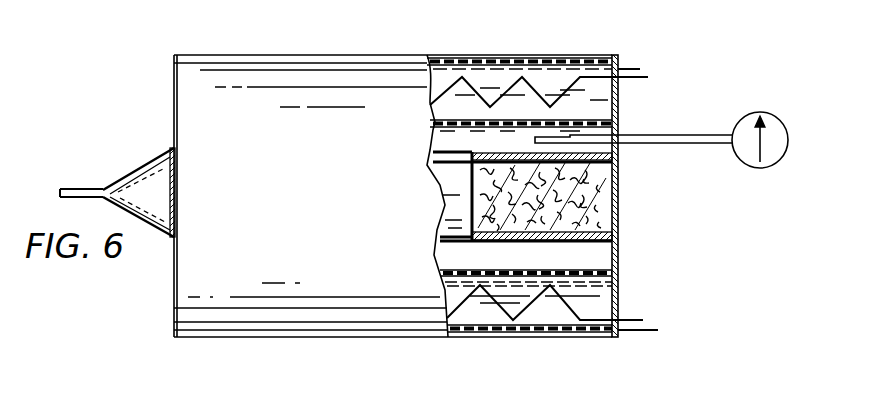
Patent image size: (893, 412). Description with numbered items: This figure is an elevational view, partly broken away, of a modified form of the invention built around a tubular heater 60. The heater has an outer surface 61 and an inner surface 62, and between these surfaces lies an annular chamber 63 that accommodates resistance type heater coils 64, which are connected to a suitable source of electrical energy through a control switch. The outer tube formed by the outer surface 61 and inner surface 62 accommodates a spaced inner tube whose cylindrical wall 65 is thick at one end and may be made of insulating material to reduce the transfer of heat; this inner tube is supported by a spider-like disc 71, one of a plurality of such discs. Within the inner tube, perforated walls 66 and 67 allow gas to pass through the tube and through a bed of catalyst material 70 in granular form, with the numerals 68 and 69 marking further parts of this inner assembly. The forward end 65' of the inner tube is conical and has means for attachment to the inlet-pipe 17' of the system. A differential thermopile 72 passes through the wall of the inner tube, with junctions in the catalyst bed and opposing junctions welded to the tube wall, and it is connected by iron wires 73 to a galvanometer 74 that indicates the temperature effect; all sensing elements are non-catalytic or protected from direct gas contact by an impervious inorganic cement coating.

The tubular heater 60 is at (175, 57).
The outer surface 61 is at (344, 60).
The inner surface 62 is at (598, 122).
The annular chamber 63 is at (485, 70).
The resistance type heater coils 64 is at (545, 75).
The cylindrical wall 65 is at (516, 255).
The forward end of the inner tube 65' is at (139, 189).
The perforated wall 66 is at (618, 218).
The perforated wall 67 is at (470, 172).
The inner tube 68 is at (445, 203).
The end plate 69 is at (598, 240).
The catalyst material 70 is at (613, 173).
The spider-like disc 71 is at (615, 255).
The thermopile 72 is at (535, 152).
The iron wires 73 is at (672, 137).
The galvanometer 74 is at (769, 165).
The inlet conduit 17' is at (68, 171).